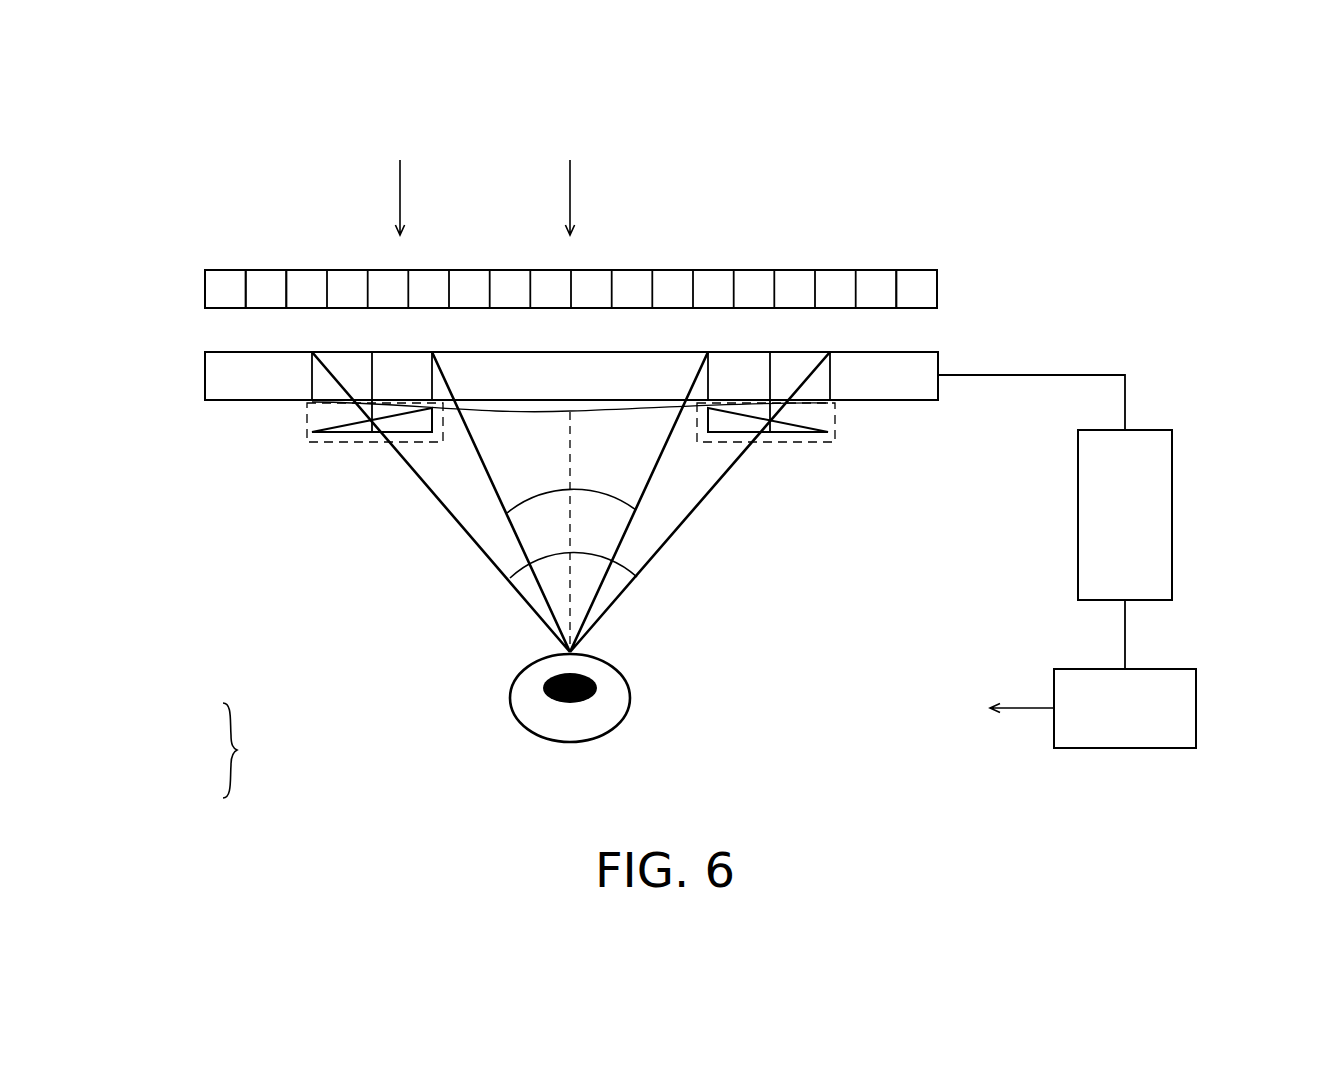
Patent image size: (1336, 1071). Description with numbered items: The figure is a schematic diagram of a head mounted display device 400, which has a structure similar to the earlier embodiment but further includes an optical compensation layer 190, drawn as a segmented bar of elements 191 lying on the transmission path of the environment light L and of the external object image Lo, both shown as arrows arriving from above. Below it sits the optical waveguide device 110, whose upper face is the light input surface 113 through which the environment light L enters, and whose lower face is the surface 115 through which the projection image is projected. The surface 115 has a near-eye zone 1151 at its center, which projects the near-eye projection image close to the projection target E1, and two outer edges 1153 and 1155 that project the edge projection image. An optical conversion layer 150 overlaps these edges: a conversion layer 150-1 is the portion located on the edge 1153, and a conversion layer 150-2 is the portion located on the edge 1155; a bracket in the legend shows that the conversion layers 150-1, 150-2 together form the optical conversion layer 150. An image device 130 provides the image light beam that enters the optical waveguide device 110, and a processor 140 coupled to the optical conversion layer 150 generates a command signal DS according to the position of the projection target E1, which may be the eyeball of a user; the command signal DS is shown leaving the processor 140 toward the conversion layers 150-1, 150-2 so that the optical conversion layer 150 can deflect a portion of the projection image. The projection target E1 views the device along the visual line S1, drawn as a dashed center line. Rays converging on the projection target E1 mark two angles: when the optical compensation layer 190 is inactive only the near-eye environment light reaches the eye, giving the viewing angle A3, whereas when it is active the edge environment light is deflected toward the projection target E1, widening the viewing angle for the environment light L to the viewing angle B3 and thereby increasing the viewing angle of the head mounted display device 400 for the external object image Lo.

The optical compensation layer 190 is at (710, 272).
The pixel 191 is at (270, 283).
The optical waveguide device 110 is at (923, 365).
The light input surface 113 is at (243, 341).
The surface 115 is at (247, 411).
The near-eye zone 1151 is at (599, 411).
The edge 1153 is at (387, 436).
The edge 1155 is at (760, 400).
The conversion layer 150-1 is at (293, 463).
The conversion layer 150-2 is at (851, 503).
The optical conversion layer 150 is at (212, 752).
The image device 130 is at (1172, 494).
The processor 140 is at (1196, 710).
The head mounted display device 400 is at (1208, 887).
The external object image Lo is at (409, 177).
The environment light L is at (572, 177).
The command signal DS is at (331, 453).
The viewing angle A3 is at (542, 492).
The viewing angle B3 is at (592, 553).
The visual line S1 is at (570, 609).
The projection target E1 is at (617, 703).